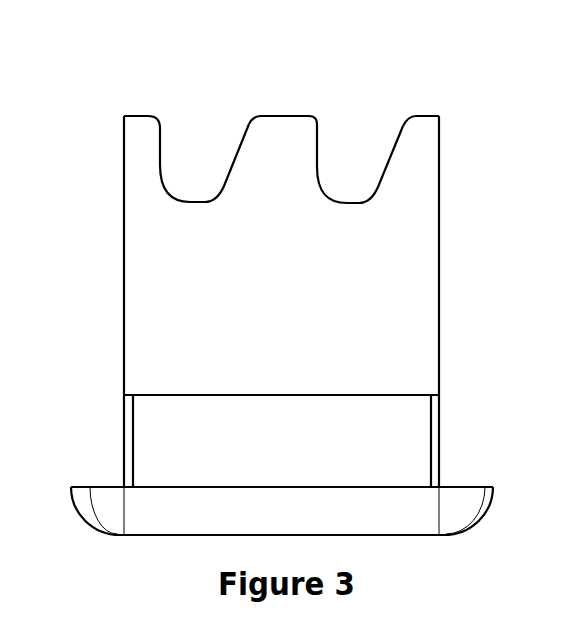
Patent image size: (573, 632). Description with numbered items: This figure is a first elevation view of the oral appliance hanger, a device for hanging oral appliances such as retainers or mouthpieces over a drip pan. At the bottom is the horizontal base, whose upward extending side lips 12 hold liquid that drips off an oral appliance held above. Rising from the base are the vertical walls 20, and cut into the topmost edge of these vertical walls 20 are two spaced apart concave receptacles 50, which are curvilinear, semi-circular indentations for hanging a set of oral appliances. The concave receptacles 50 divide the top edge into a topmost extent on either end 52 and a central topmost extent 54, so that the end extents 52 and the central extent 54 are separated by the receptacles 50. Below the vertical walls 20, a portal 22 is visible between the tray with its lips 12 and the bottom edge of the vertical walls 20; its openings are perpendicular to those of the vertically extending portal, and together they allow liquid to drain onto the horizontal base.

The side lips 12 is at (157, 505).
The vertical walls 20 is at (227, 309).
The portal 22 is at (315, 424).
The concave receptacles 50 is at (188, 176).
The topmost extent on either end 52 is at (139, 132).
The central topmost extent 54 is at (276, 118).